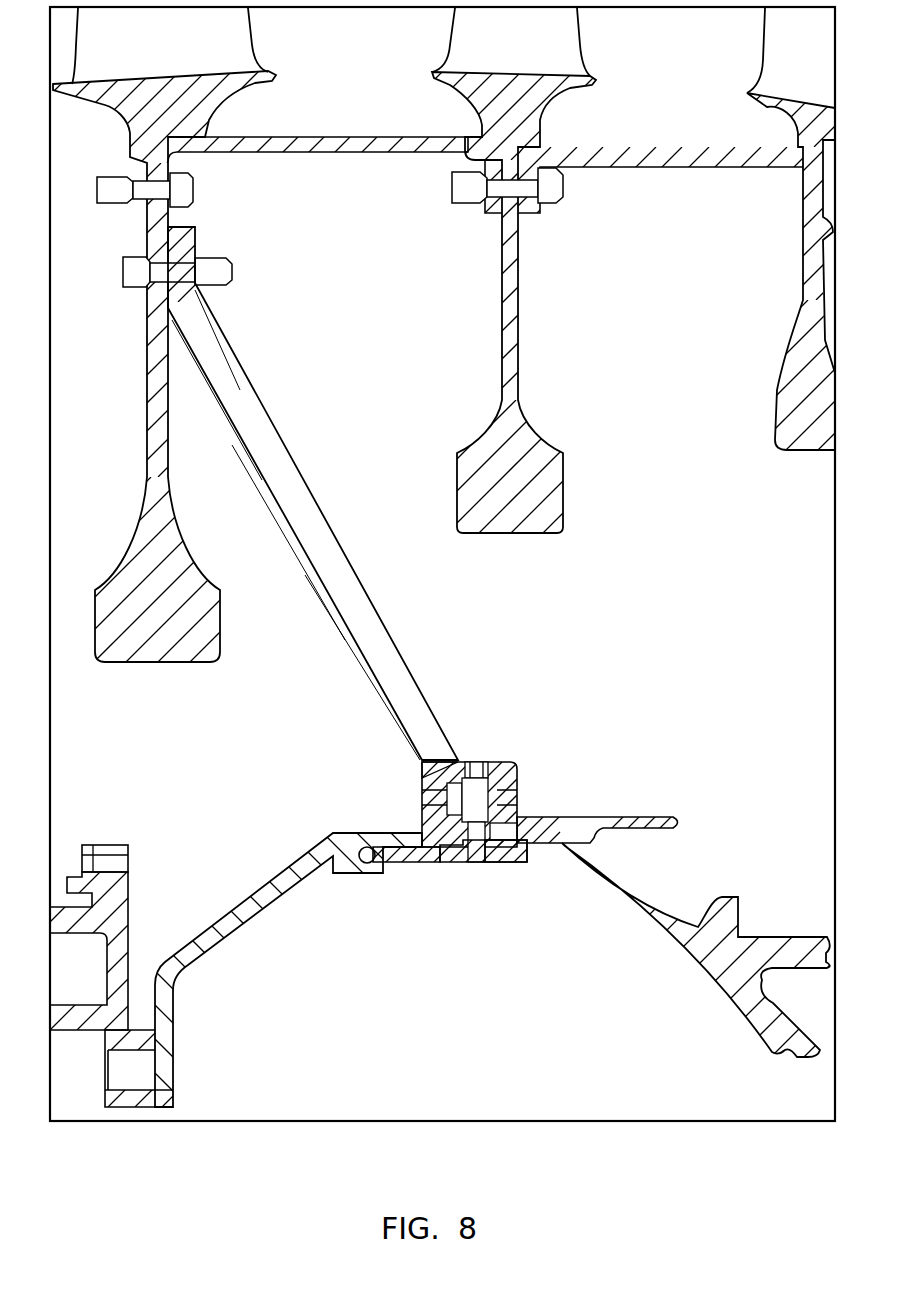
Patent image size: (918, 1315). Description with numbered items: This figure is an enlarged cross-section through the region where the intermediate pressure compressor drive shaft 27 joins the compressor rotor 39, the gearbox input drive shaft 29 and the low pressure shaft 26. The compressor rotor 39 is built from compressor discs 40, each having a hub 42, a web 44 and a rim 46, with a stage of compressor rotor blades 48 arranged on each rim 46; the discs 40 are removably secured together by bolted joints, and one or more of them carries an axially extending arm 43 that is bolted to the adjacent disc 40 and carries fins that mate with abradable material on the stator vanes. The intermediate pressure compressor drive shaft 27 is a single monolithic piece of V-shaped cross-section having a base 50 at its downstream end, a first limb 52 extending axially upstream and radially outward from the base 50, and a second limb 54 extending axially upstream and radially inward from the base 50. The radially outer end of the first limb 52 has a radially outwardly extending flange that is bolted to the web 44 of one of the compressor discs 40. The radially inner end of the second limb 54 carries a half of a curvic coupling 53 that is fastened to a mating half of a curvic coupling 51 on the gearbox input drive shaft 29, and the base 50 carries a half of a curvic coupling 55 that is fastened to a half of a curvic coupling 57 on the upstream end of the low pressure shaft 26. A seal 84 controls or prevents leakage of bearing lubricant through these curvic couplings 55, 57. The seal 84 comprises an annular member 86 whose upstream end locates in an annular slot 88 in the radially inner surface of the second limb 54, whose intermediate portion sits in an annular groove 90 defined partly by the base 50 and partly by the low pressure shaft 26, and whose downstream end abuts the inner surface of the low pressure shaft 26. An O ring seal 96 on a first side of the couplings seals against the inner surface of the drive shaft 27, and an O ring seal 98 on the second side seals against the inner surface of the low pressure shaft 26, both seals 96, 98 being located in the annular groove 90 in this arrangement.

The low pressure shaft 26 is at (747, 1010).
The intermediate pressure compressor drive shaft 27 is at (317, 493).
The gearbox input drive shaft 29 is at (95, 1012).
The compressor rotor 39 is at (567, 552).
The compressor disc 40 is at (444, 335).
The hub 42 is at (207, 623).
The axially extending arm 43 is at (340, 148).
The web 44 is at (170, 470).
The rim 46 is at (248, 82).
The compressor rotor blades 48 is at (243, 25).
The base 50 is at (456, 760).
The half of a curvic coupling 51 is at (136, 1055).
The first limb 52 is at (262, 427).
The half of a curvic coupling 53 is at (178, 1114).
The second limb 54 is at (235, 927).
The half of a curvic coupling 55 is at (446, 824).
The half of a curvic coupling 57 is at (477, 769).
The seal 84 is at (508, 864).
The annular member 86 is at (427, 860).
The annular slot 88 is at (370, 862).
The annular groove 90 is at (500, 823).
The seal 96 is at (446, 828).
The seal 98 is at (548, 820).